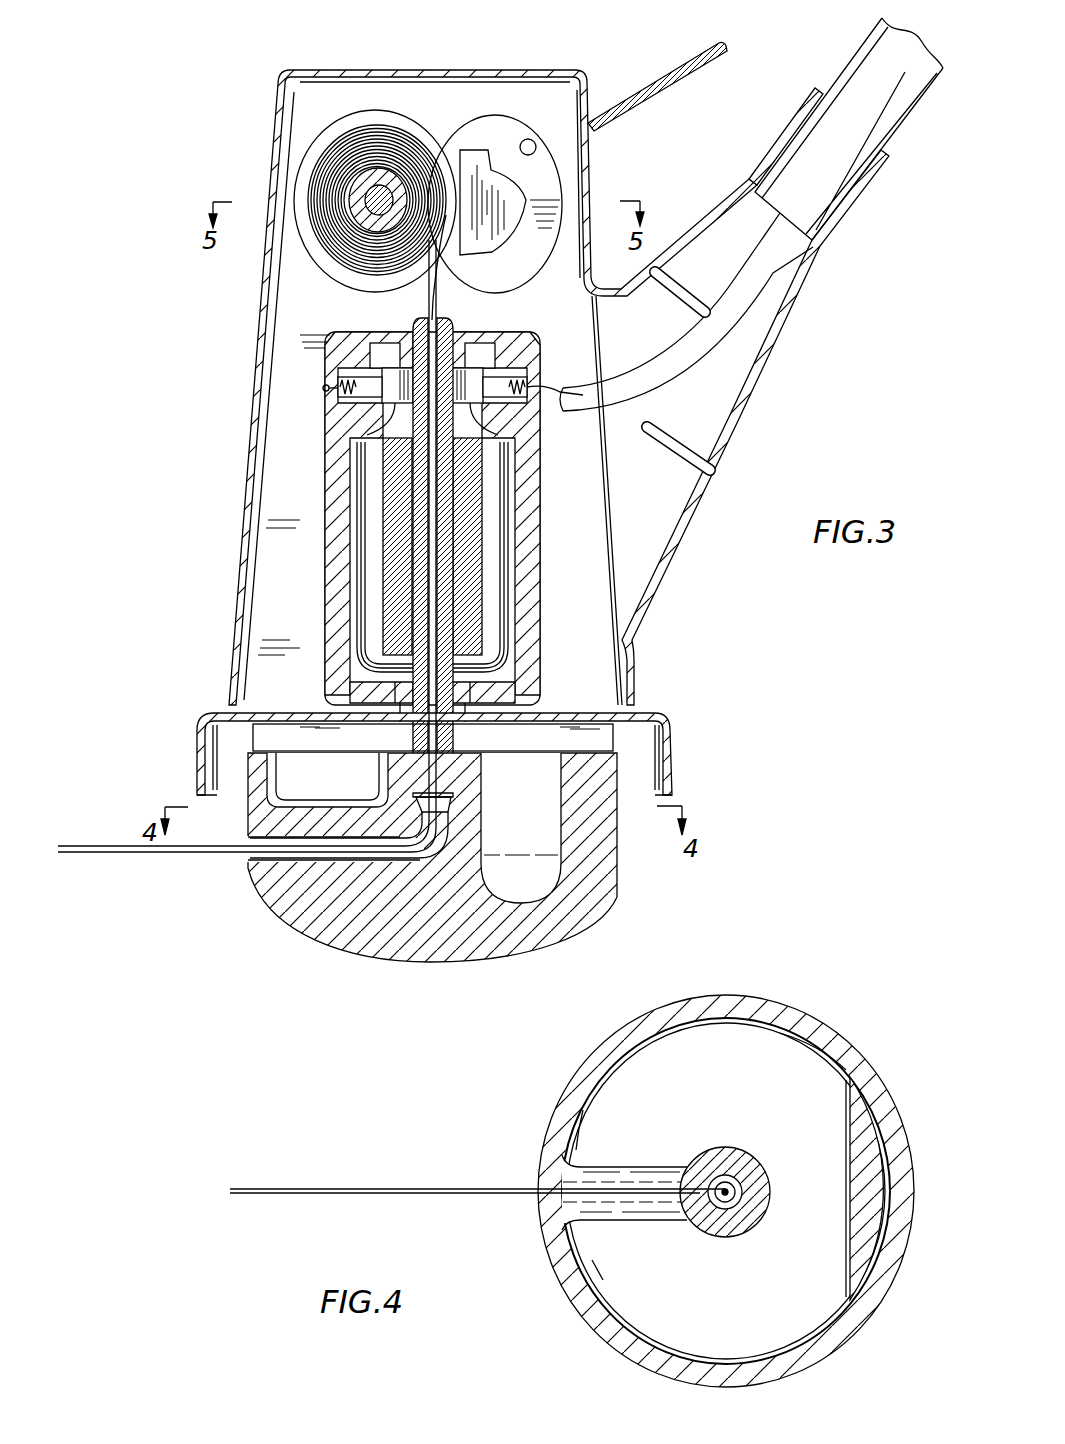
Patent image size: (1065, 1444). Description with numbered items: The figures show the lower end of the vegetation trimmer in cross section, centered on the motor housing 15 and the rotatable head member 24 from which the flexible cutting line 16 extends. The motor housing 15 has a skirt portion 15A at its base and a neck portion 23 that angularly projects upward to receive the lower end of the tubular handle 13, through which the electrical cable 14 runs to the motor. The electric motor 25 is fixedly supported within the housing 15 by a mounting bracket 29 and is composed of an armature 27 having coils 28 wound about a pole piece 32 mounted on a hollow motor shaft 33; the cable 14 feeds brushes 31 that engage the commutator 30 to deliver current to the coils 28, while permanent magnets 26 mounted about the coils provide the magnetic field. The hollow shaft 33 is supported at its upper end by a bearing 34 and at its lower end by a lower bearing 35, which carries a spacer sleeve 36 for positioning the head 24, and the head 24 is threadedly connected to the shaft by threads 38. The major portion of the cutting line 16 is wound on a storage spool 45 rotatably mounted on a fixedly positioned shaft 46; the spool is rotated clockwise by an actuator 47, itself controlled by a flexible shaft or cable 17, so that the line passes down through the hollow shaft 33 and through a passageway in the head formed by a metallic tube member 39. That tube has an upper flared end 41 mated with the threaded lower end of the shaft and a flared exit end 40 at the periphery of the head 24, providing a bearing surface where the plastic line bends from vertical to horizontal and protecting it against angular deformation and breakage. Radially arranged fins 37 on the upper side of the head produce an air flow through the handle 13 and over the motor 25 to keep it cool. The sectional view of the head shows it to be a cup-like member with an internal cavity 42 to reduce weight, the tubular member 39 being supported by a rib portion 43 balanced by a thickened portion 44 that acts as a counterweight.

In FIG. 3, the tubular handle 13 is at (870, 38).
In FIG. 3, the electrical cable 14 is at (704, 360).
In FIG. 3, the motor housing 15 is at (282, 112).
In FIG. 3, the skirt portion 15A is at (672, 742).
In FIG. 3, the cutting line 16 is at (85, 858).
In FIG. 4, the cutting line 16 is at (350, 1187).
In FIG. 3, the flexible shaft or cable 17 is at (696, 54).
In FIG. 3, the neck portion 23 is at (826, 278).
In FIG. 3, the head member 24 is at (612, 893).
In FIG. 4, the head member 24 is at (772, 1000).
In FIG. 3, the electric motor 25 is at (545, 546).
In FIG. 3, the permanent magnets 26 is at (327, 592).
In FIG. 3, the armature 27 is at (357, 637).
In FIG. 3, the coils 28 is at (370, 545).
In FIG. 3, the mounting bracket 29 is at (278, 457).
In FIG. 3, the commutator 30 is at (380, 370).
In FIG. 3, the brushes 31 is at (350, 418).
In FIG. 3, the pole piece 32 is at (395, 497).
In FIG. 3, the hollow motor shaft 33 is at (540, 625).
In FIG. 4, the hollow motor shaft 33 is at (720, 1185).
In FIG. 3, the bearing 34 is at (467, 333).
In FIG. 3, the lower bearing 35 is at (485, 680).
In FIG. 3, the spacer sleeve 36 is at (395, 718).
In FIG. 3, the fins 37 is at (522, 740).
In FIG. 3, the threads 38 is at (455, 780).
In FIG. 4, the threads 38 is at (735, 1212).
In FIG. 3, the tube member 39 is at (428, 850).
In FIG. 4, the tube member 39 is at (645, 1207).
In FIG. 3, the flared exit end 40 is at (250, 885).
In FIG. 4, the flared exit end 40 is at (541, 1213).
In FIG. 3, the upper flared end 41 is at (452, 812).
In FIG. 3, the internal cavity 42 is at (515, 885).
In FIG. 4, the internal cavity 42 is at (772, 1066).
In FIG. 3, the supporting rib portion 43 is at (295, 870).
In FIG. 4, the supporting rib portion 43 is at (630, 1167).
In FIG. 3, the thickened portion 44 is at (600, 850).
In FIG. 4, the thickened portion 44 is at (890, 1142).
In FIG. 3, the storage spool 45 is at (381, 112).
In FIG. 3, the shaft 46 is at (376, 186).
In FIG. 3, the actuator 47 is at (497, 114).